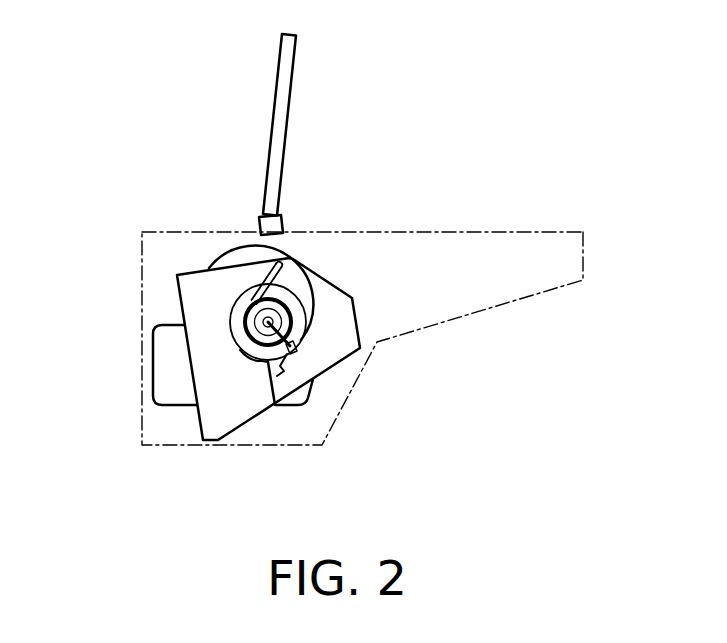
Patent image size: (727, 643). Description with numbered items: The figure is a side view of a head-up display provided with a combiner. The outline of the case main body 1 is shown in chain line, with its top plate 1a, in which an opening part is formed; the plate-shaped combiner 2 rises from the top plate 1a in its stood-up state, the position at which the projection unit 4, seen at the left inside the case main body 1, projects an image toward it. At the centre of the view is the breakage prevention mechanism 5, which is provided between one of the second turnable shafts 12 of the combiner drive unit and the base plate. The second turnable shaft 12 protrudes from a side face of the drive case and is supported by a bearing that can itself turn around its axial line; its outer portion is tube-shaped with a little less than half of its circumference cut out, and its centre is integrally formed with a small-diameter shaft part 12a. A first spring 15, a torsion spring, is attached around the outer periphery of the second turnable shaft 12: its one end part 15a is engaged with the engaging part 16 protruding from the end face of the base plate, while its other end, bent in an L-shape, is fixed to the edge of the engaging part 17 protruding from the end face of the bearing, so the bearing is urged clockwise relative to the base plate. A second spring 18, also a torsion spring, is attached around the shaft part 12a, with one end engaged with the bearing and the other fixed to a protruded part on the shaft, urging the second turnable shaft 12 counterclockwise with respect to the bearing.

The case main body 1 is at (531, 296).
The top plate 1a is at (449, 230).
The combiner 2 is at (288, 84).
The projection unit 4 is at (163, 372).
The breakage prevention mechanism 5 is at (316, 363).
The second turnable shaft 12 is at (246, 330).
The shaft part 12a is at (280, 315).
The first spring 15 is at (243, 317).
The one end part 15a is at (243, 284).
The engaging part 16 is at (262, 268).
The engaging part 17 is at (277, 366).
The second spring 18 is at (314, 343).